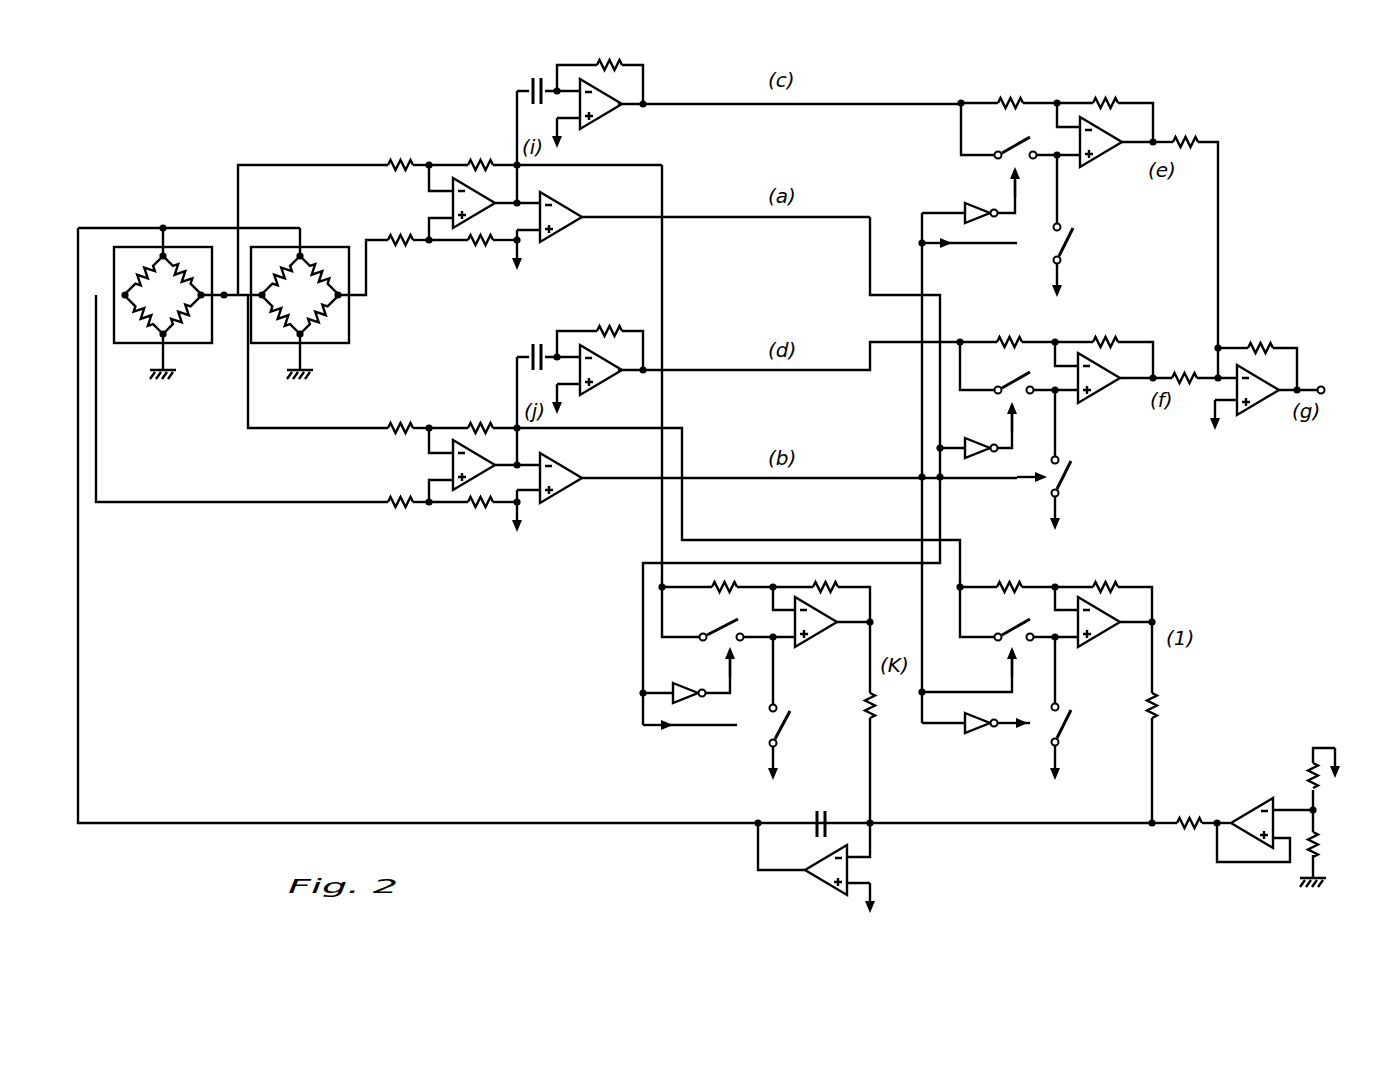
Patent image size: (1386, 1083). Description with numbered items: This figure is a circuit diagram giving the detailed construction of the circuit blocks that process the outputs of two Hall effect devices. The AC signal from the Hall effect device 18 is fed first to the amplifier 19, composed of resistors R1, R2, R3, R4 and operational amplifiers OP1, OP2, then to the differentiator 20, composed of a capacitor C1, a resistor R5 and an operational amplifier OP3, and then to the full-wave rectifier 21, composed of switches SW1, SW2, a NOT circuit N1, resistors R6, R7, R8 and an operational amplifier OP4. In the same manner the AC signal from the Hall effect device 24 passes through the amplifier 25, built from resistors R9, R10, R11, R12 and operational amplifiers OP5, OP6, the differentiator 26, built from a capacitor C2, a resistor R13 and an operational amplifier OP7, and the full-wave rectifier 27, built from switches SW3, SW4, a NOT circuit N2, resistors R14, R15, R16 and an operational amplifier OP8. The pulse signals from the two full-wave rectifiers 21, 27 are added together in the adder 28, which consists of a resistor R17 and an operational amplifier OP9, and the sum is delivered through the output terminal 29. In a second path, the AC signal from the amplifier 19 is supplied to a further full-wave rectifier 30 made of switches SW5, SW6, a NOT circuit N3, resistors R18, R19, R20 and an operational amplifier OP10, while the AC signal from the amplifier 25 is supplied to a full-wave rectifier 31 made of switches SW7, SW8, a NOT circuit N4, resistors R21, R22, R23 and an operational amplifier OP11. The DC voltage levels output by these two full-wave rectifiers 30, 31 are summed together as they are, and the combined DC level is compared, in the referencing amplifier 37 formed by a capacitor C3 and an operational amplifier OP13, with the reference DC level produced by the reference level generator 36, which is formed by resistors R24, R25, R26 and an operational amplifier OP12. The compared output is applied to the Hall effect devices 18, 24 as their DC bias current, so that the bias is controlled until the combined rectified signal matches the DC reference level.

The Hall effect device 18 is at (327, 344).
The Hall effect device 24 is at (166, 350).
The amplifier 19 is at (625, 198).
The amplifier 25 is at (698, 472).
The differentiator 20 is at (739, 88).
The differentiator 26 is at (738, 357).
The full-wave rectifier 21 is at (1032, 177).
The full-wave rectifier 27 is at (1029, 418).
The adder 28 is at (1263, 392).
The output terminal 29 is at (1318, 388).
The full-wave rectifier 30 is at (756, 644).
The full-wave rectifier 31 is at (1036, 665).
The reference level generator 36 is at (1258, 818).
The referencing amplifier 37 is at (828, 767).
The resistor R1 is at (384, 168).
The resistor R2 is at (464, 168).
The resistor R3 is at (388, 245).
The resistor R4 is at (466, 245).
The resistor R5 is at (600, 67).
The resistor R6 is at (998, 97).
The resistor R7 is at (1094, 97).
The resistor R8 is at (1178, 160).
The resistor R9 is at (386, 431).
The resistor R10 is at (460, 431).
The resistor R11 is at (382, 508).
The resistor R12 is at (464, 508).
The resistor R13 is at (596, 333).
The resistor R14 is at (990, 343).
The resistor R15 is at (1088, 343).
The resistor R16 is at (1164, 375).
The resistor R17 is at (1248, 345).
The resistor R18 is at (724, 577).
The resistor R19 is at (812, 577).
The resistor R20 is at (864, 689).
The resistor R21 is at (990, 587).
The resistor R22 is at (1088, 587).
The resistor R23 is at (1182, 726).
The resistor R24 is at (1176, 833).
The resistor R25 is at (1304, 776).
The resistor R26 is at (1320, 858).
The capacitor C1 is at (527, 85).
The capacitor C2 is at (522, 350).
The capacitor C3 is at (830, 821).
The operational amplifier OP1 is at (439, 203).
The operational amplifier OP2 is at (548, 226).
The operational amplifier OP3 is at (628, 120).
The operational amplifier OP4 is at (1130, 165).
The operational amplifier OP5 is at (439, 467).
The operational amplifier OP6 is at (548, 497).
The operational amplifier OP7 is at (628, 388).
The operational amplifier OP8 is at (1128, 400).
The operational amplifier OP9 is at (1276, 412).
The operational amplifier OP10 is at (840, 645).
The operational amplifier OP11 is at (1128, 645).
The operational amplifier OP12 is at (1244, 810).
The operational amplifier OP13 is at (808, 885).
The switch SW1 is at (990, 140).
The switch SW2 is at (1072, 246).
The switch SW3 is at (998, 384).
The switch SW4 is at (1070, 484).
The switch SW5 is at (724, 624).
The switch SW6 is at (784, 742).
The switch SW7 is at (998, 631).
The switch SW8 is at (1070, 724).
The NOT circuit N1 is at (967, 204).
The NOT circuit N2 is at (964, 440).
The NOT circuit N3 is at (688, 676).
The NOT circuit N4 is at (969, 733).